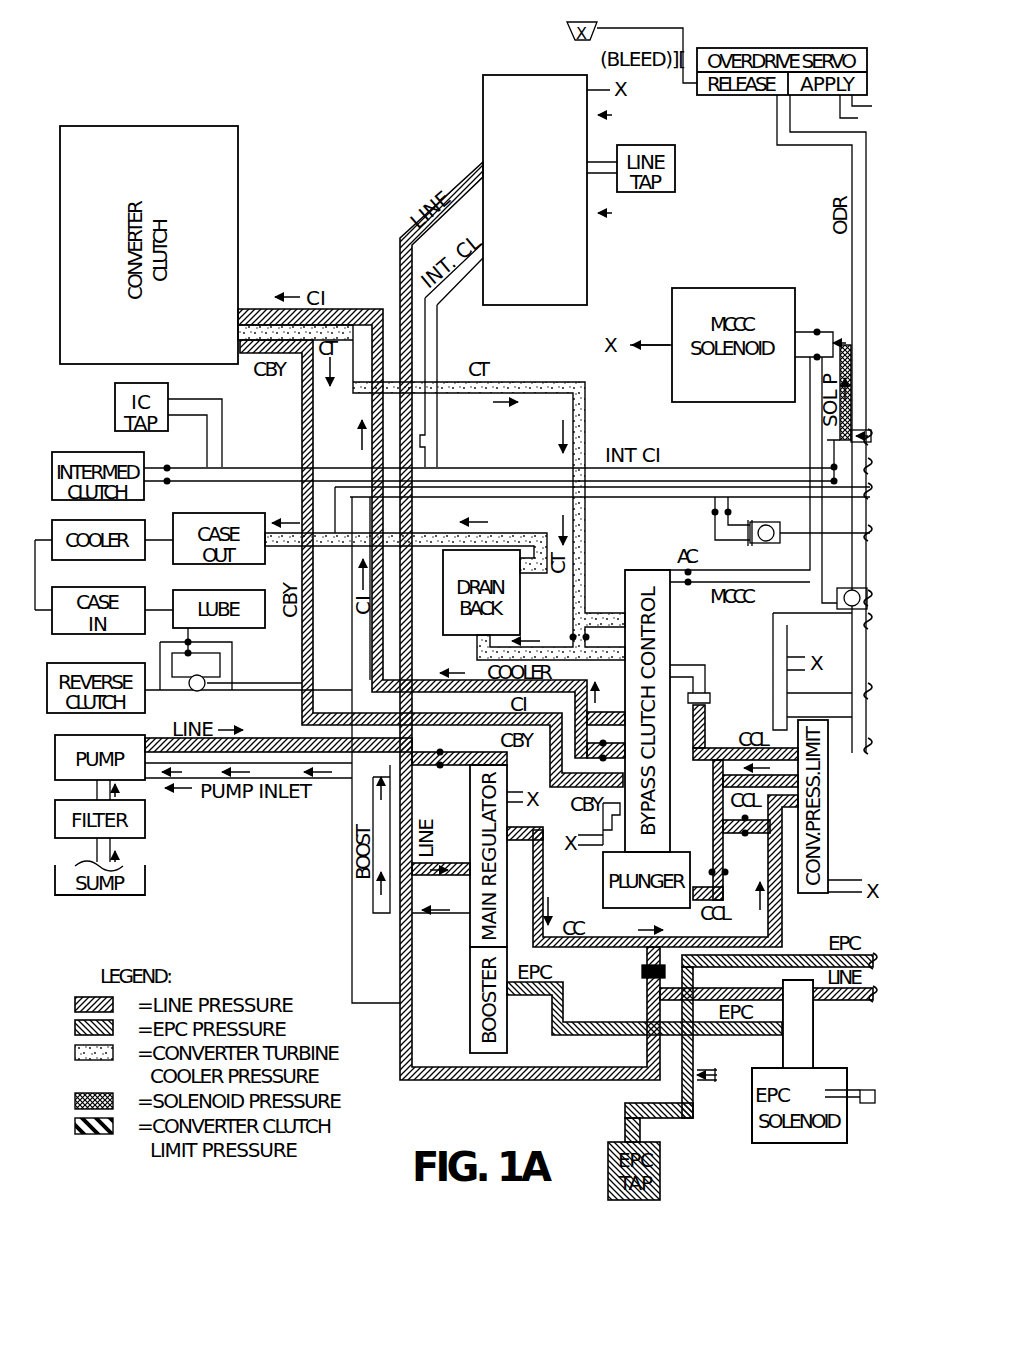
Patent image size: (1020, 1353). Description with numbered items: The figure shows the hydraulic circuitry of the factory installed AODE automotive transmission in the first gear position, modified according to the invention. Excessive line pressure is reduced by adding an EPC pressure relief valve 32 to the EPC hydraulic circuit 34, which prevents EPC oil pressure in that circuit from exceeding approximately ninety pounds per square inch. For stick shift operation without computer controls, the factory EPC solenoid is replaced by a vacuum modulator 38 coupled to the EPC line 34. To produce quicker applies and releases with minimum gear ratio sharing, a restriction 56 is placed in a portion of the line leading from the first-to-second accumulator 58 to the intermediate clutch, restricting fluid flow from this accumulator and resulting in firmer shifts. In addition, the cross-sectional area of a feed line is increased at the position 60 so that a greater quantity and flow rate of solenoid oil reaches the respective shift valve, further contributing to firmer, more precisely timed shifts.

The 1-2 accumulator 58 is at (499, 75).
The restriction 56 is at (437, 443).
The feed line position 60 is at (682, 571).
The EPC hydraulic circuit 34 is at (577, 1036).
The EPC pressure relief valve 32 is at (707, 1088).
The vacuum modulator 38 is at (867, 1088).